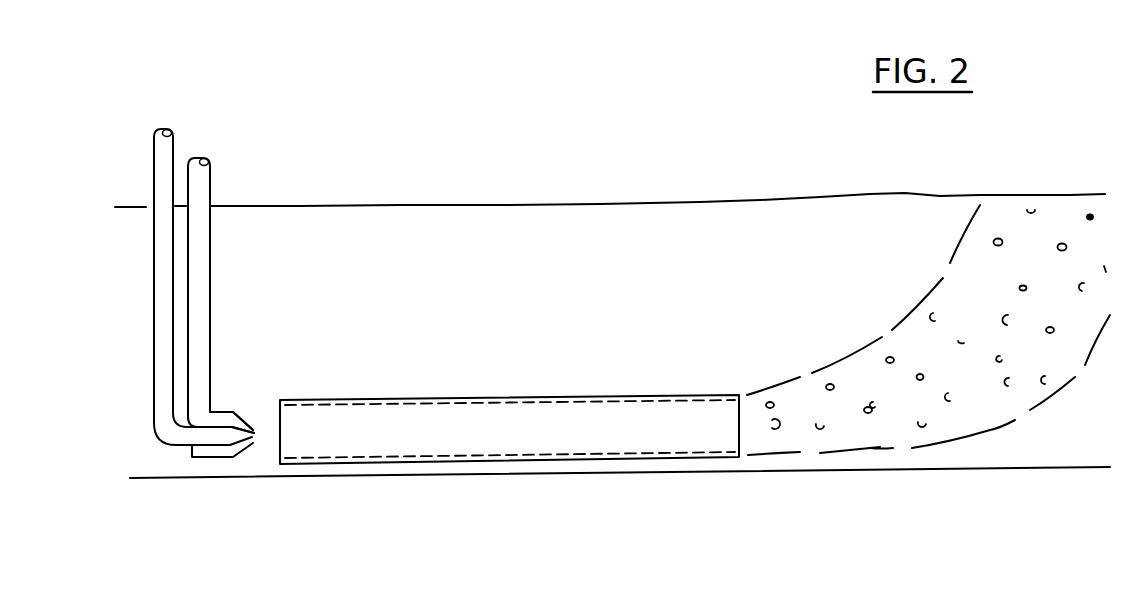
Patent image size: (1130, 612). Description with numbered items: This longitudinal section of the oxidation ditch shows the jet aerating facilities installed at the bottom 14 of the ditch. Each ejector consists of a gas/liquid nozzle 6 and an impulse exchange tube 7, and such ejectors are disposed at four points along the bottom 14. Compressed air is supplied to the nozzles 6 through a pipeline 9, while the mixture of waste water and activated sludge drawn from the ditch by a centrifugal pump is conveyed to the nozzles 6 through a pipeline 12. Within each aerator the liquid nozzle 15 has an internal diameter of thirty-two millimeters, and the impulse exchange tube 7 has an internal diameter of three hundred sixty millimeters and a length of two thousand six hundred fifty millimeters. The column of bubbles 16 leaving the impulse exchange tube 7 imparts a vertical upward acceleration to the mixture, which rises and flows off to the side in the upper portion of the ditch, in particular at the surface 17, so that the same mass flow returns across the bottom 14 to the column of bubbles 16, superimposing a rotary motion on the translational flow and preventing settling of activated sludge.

The gas/liquid nozzle 6 is at (235, 411).
The impulse exchange tube 7 is at (453, 410).
The pipeline 9 is at (203, 172).
The pipeline 12 is at (167, 142).
The bottom 14 is at (1075, 468).
The liquid nozzle 15 is at (257, 436).
The column of bubbles 16 is at (962, 287).
The surface 17 is at (734, 197).